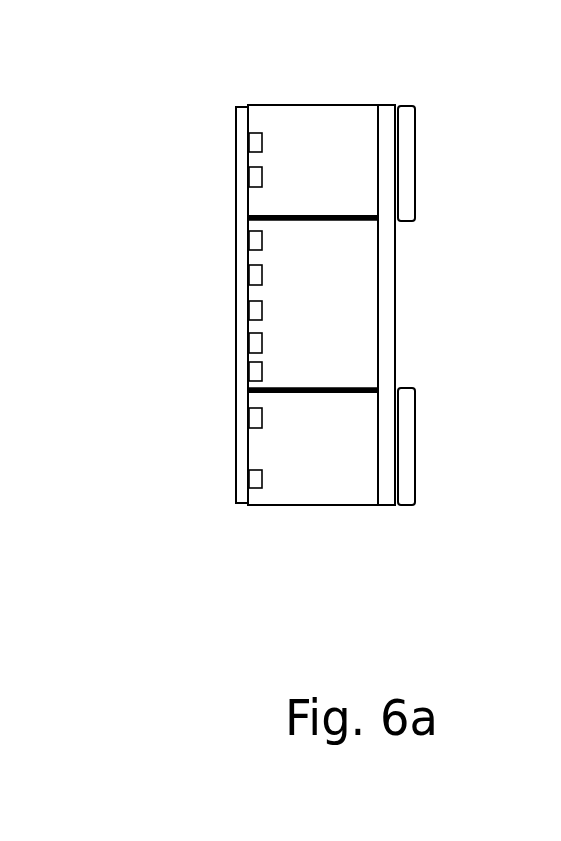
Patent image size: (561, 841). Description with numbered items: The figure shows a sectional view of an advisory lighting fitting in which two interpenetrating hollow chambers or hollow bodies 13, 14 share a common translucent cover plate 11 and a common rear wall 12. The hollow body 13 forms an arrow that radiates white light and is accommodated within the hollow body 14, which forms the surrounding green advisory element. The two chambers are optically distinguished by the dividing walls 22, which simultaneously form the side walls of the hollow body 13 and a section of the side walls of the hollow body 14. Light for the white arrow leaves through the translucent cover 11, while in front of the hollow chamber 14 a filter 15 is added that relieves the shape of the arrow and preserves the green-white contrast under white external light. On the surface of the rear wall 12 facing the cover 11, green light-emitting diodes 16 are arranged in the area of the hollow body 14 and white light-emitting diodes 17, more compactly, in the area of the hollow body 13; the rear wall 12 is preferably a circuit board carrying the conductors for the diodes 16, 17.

The translucent cover plate 11 is at (393, 348).
The rear wall 12 is at (240, 348).
The hollow body 13 is at (290, 300).
The hollow body 14 is at (323, 145).
The filter 15 is at (407, 192).
The green light-emitting diodes 16 is at (258, 147).
The white light-emitting diodes 17 is at (253, 308).
The dividing walls 22 is at (335, 213).